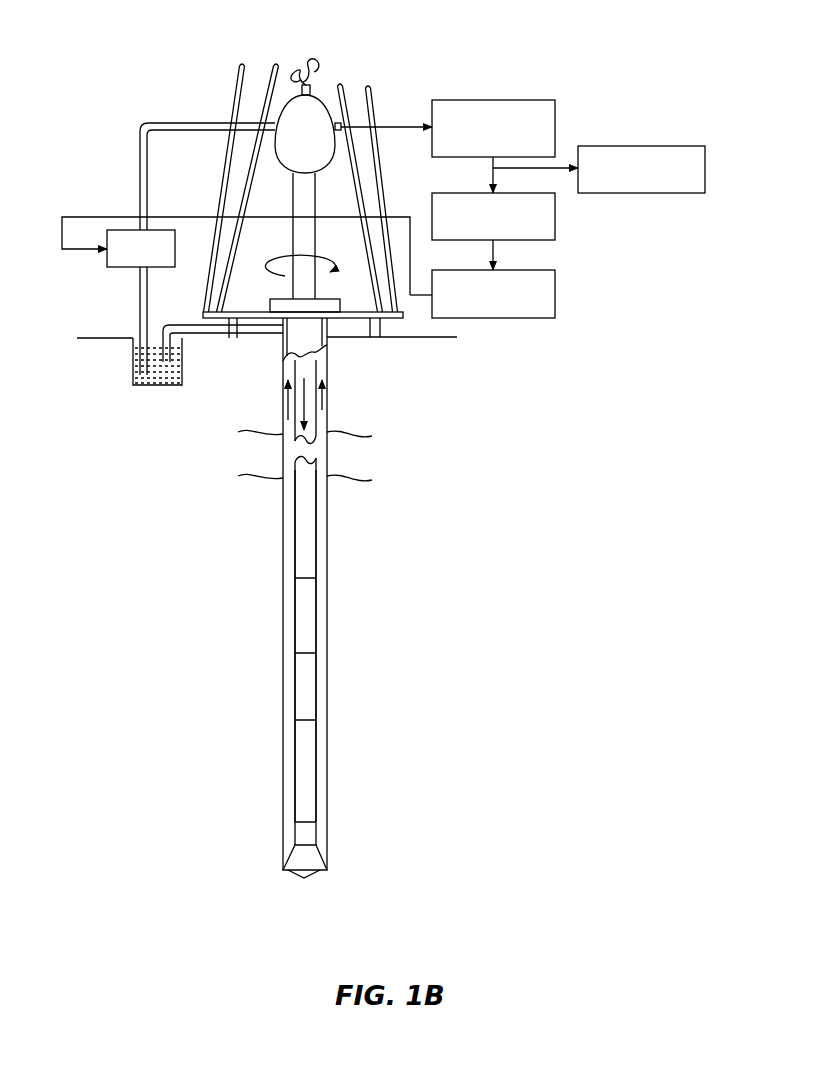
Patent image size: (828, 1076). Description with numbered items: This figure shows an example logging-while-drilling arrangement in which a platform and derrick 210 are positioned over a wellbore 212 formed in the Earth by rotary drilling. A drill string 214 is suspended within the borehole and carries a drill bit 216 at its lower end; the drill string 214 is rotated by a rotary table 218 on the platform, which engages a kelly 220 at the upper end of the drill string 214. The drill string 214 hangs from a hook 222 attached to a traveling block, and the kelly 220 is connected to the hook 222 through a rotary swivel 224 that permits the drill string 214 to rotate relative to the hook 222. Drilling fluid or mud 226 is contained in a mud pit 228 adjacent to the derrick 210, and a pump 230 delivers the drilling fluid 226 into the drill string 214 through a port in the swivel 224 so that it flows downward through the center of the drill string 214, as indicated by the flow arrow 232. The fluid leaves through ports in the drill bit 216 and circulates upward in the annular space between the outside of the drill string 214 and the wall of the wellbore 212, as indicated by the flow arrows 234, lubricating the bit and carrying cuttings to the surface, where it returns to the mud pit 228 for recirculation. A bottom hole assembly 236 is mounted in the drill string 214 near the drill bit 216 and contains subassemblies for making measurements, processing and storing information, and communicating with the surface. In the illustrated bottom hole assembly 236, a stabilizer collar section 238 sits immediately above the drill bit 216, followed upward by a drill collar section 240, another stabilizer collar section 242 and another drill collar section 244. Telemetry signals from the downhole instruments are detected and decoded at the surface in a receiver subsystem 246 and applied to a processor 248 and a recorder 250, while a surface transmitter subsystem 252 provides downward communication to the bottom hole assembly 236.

The platform and derrick 210 is at (414, 317).
The wellbore 212 is at (317, 432).
The drill string 214 is at (310, 511).
The drill bit 216 is at (302, 857).
The rotary table 218 is at (313, 305).
The kelly 220 is at (306, 192).
The hook 222 is at (314, 62).
The rotary swivel 224 is at (302, 122).
The drilling fluid or mud 226 is at (160, 370).
The mud pit 228 is at (134, 353).
The pump 230 is at (138, 231).
The flow arrow 232 is at (312, 412).
The flow arrows 234 is at (323, 402).
The bottom hole assembly 236 is at (368, 830).
The stabilizer collar section 238 is at (302, 753).
The drill collar section 240 is at (302, 690).
The stabilizer collar section 242 is at (302, 620).
The drill collar section 244 is at (293, 543).
The receiver subsystem 246 is at (505, 100).
The processor 248 is at (555, 227).
The recorder 250 is at (652, 146).
The surface transmitter subsystem 252 is at (555, 298).